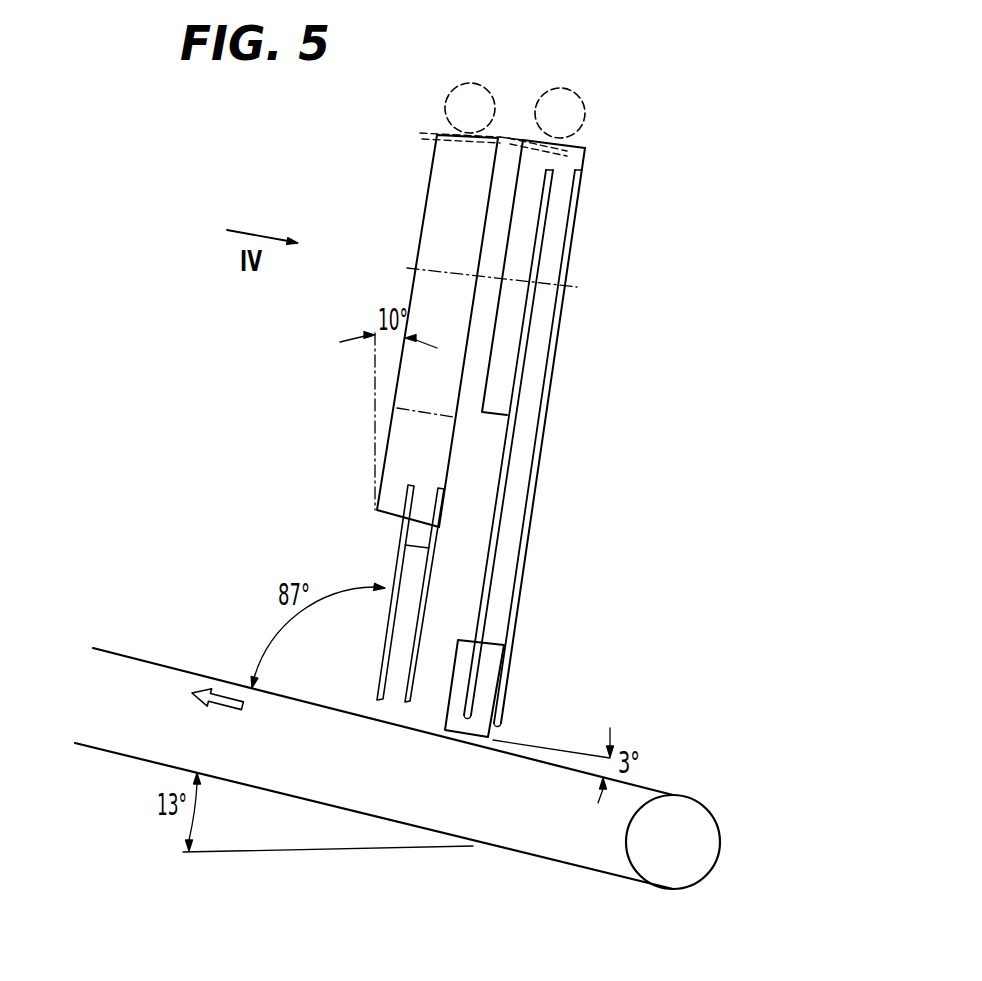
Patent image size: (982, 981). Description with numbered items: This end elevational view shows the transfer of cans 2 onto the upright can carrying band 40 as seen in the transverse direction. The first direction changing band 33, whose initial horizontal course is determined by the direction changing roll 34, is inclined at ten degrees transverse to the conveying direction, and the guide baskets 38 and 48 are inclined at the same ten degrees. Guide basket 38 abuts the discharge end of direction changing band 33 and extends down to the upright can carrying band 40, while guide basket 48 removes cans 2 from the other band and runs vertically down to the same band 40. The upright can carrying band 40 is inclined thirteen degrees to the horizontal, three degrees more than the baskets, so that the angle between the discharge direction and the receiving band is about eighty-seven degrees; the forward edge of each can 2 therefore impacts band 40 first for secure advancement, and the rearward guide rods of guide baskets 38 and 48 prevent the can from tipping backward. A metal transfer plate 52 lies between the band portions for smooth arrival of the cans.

The can 2 is at (481, 87).
The first direction changing band 33 is at (426, 221).
The direction changing roll 34 is at (582, 162).
The guide basket 38 is at (405, 545).
The upright can carrying band 40 is at (165, 665).
The guide basket 48 is at (520, 497).
The metal transfer plate 52 is at (510, 136).